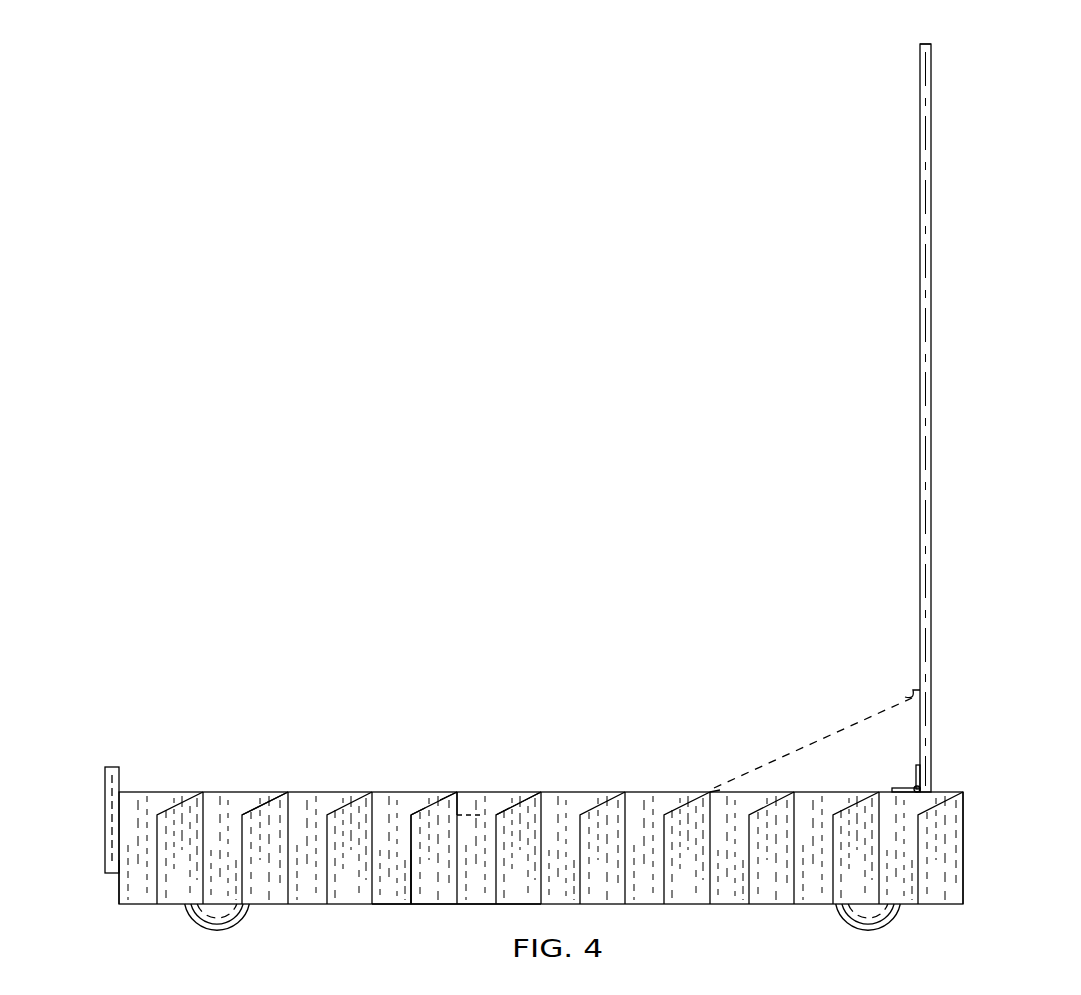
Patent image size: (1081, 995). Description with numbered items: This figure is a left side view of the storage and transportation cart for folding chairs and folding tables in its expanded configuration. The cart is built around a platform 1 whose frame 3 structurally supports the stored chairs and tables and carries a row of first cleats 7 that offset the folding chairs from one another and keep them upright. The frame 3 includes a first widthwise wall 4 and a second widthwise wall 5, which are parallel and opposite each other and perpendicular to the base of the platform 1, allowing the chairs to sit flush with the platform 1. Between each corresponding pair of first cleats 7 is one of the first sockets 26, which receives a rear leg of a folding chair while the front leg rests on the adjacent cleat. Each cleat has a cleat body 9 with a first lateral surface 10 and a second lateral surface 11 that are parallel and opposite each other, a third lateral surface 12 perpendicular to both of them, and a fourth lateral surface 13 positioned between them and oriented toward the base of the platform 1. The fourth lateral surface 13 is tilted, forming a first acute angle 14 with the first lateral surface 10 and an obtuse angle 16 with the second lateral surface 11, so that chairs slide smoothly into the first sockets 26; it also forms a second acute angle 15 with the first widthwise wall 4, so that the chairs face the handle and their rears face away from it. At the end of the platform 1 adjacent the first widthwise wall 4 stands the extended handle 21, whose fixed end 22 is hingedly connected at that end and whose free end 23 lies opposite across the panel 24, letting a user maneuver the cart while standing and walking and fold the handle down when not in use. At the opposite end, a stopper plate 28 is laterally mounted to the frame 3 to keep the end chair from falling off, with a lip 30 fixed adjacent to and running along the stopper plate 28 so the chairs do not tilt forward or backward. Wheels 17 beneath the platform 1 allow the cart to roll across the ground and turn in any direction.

The platform 1 is at (150, 789).
The frame 3 is at (220, 790).
The first widthwise wall 4 is at (963, 877).
The second widthwise wall 5 is at (120, 895).
The first cleats 7 is at (182, 801).
The cleat body 9 is at (270, 808).
The first lateral surface 10 is at (458, 806).
The second lateral surface 11 is at (411, 824).
The third lateral surface 12 is at (437, 905).
The fourth lateral surface 13 is at (413, 815).
The first acute angle 14 is at (446, 803).
The second acute angle 15 is at (905, 697).
The obtuse angle 16 is at (411, 862).
The wheels 17 is at (187, 914).
The extended handle 21 is at (871, 438).
The fixed end 22 is at (940, 785).
The free end 23 is at (916, 52).
The panel 24 is at (922, 605).
The first sockets 26 is at (484, 813).
The stopper plate 28 is at (107, 848).
The lip 30 is at (105, 770).